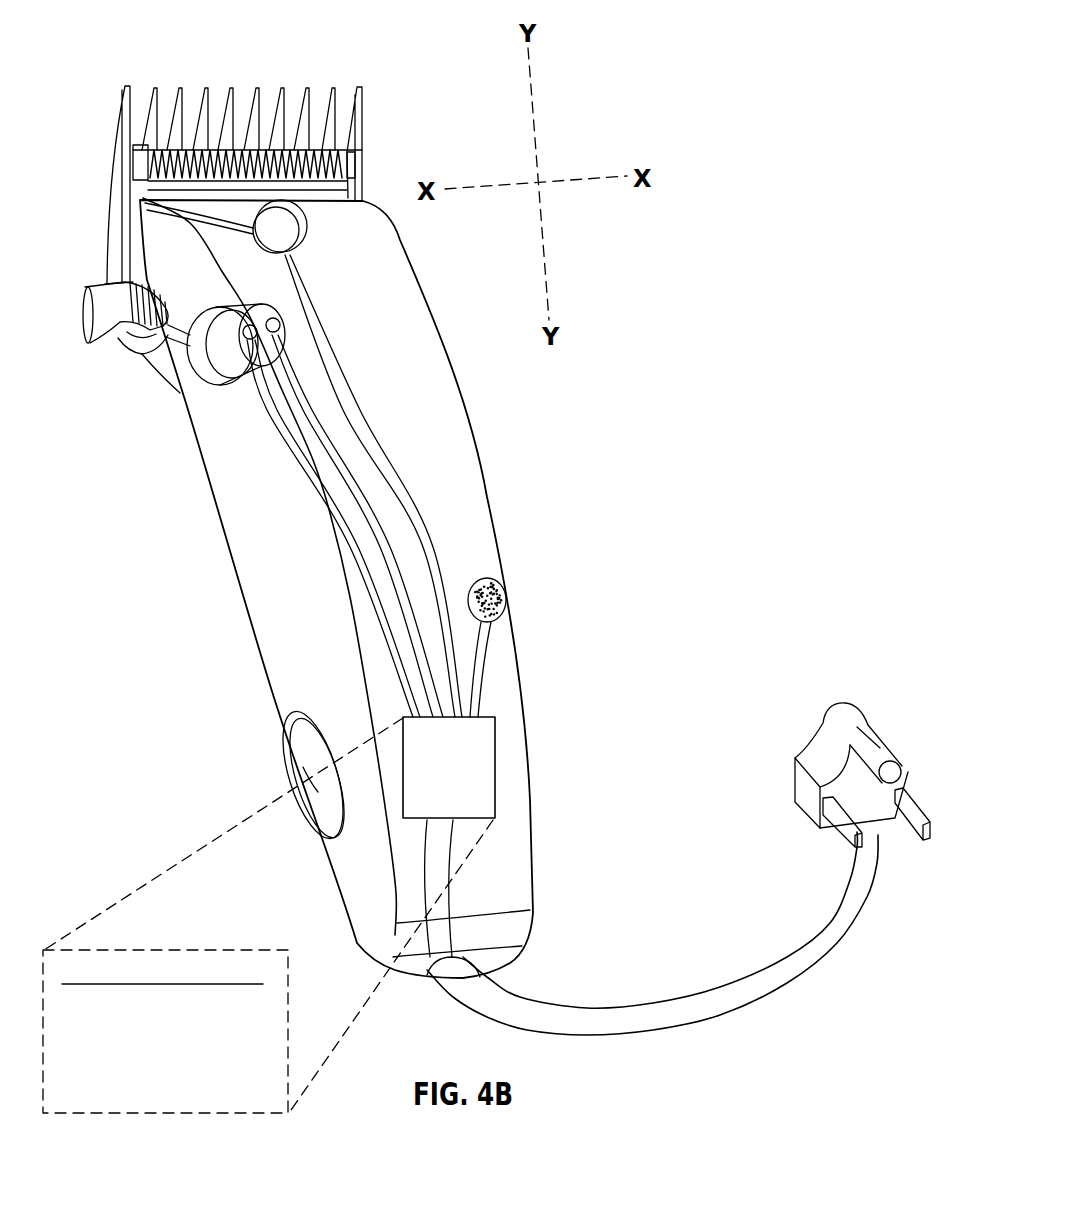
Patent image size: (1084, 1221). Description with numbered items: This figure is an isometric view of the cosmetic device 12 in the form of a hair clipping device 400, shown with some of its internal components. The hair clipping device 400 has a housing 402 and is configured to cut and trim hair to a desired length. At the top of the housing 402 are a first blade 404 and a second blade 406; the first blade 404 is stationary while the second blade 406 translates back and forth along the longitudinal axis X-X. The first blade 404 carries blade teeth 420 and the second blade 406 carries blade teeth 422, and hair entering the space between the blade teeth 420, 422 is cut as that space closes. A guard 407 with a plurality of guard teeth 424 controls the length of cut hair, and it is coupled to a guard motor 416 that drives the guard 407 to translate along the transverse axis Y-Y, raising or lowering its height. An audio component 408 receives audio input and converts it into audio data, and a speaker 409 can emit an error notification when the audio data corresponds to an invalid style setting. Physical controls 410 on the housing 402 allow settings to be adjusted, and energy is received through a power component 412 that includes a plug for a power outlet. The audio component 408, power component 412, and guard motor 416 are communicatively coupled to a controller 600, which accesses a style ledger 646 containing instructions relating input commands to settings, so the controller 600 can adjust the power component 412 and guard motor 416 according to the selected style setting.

The cosmetic device 12 is at (501, 567).
The hair clipping device 400 is at (731, 90).
The housing 402 is at (487, 497).
The first blade 404 is at (325, 180).
The second blade 406 is at (350, 160).
The guard 407 is at (365, 100).
The audio component 408 is at (492, 600).
The speaker 409 is at (488, 599).
The physical controls 410 is at (310, 772).
The power component 412 is at (879, 732).
The guard motor 416 is at (280, 305).
The blade teeth 420 is at (345, 150).
The blade teeth 422 is at (312, 153).
The guard teeth 424 is at (148, 98).
The controller 600 is at (477, 780).
The style ledger 646 is at (268, 915).